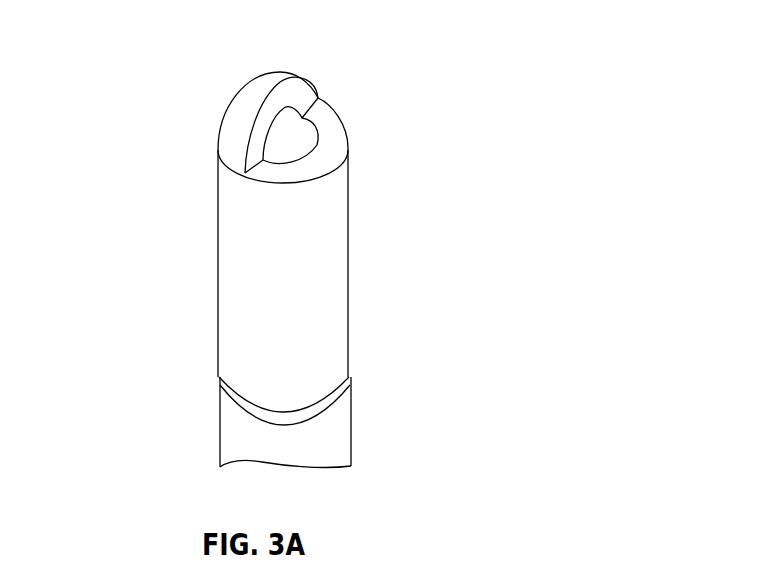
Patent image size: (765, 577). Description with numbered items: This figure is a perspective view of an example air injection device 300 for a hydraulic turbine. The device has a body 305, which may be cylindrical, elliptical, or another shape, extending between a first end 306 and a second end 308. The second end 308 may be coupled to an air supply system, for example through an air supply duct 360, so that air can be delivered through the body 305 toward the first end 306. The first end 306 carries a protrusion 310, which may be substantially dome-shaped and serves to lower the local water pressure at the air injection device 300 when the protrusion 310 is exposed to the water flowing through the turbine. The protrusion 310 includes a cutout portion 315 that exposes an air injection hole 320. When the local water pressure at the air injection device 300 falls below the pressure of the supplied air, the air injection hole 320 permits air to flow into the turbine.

The air injection device 300 is at (155, 56).
The body 305 is at (349, 320).
The first end 306 is at (195, 165).
The second end 308 is at (195, 368).
The protrusion 310 is at (217, 129).
The cutout portion 315 is at (355, 110).
The air injection hole 320 is at (318, 152).
The air supply duct 360 is at (372, 440).